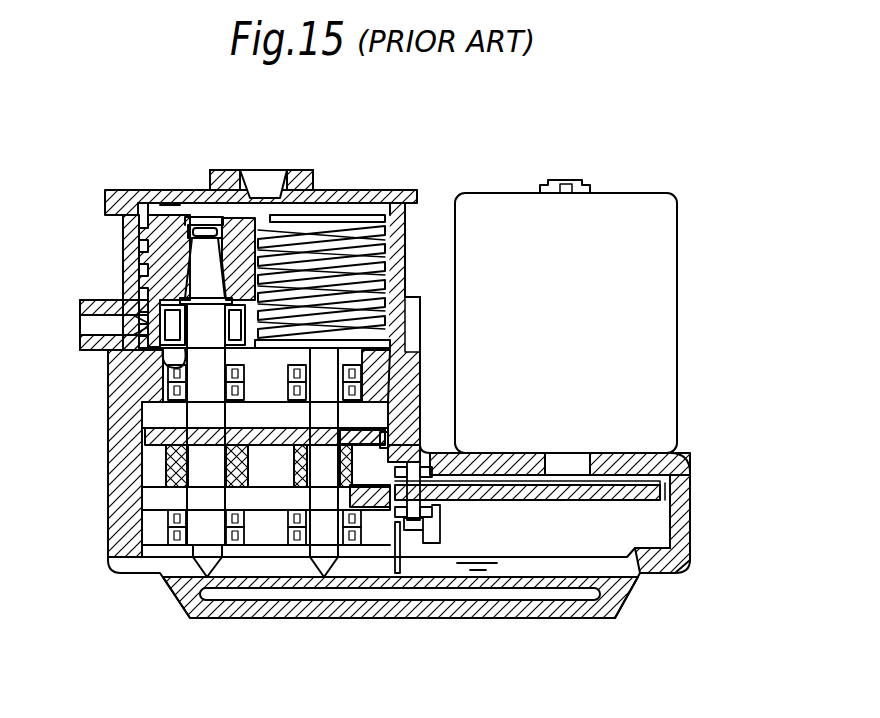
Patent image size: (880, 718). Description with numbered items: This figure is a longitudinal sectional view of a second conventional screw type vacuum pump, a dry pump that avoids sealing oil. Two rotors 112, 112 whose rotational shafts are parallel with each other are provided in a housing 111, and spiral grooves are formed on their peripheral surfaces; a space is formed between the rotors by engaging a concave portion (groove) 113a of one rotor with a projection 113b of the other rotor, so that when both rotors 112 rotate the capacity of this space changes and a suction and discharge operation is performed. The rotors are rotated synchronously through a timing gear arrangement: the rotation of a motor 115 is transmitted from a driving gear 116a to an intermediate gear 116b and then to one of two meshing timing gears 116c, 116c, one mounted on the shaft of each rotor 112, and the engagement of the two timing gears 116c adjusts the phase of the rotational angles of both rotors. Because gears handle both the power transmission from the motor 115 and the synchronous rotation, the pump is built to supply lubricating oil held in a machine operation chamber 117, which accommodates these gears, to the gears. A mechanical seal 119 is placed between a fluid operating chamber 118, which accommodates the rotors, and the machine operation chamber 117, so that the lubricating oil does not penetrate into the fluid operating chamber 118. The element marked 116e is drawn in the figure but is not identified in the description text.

The housing 111 is at (405, 247).
The rotor 112 is at (170, 205).
The concave portion (groove) 113a is at (150, 240).
The projection 113b is at (405, 248).
The motor 115 is at (650, 290).
The driving gear 116a is at (609, 493).
The intermediate gear 116b is at (457, 490).
The timing gear 116c is at (385, 440).
The gear carrier 116e is at (143, 434).
The machine operation chamber 117 is at (553, 540).
The fluid operating chamber 118 is at (204, 207).
The mechanical seal 119 is at (162, 368).